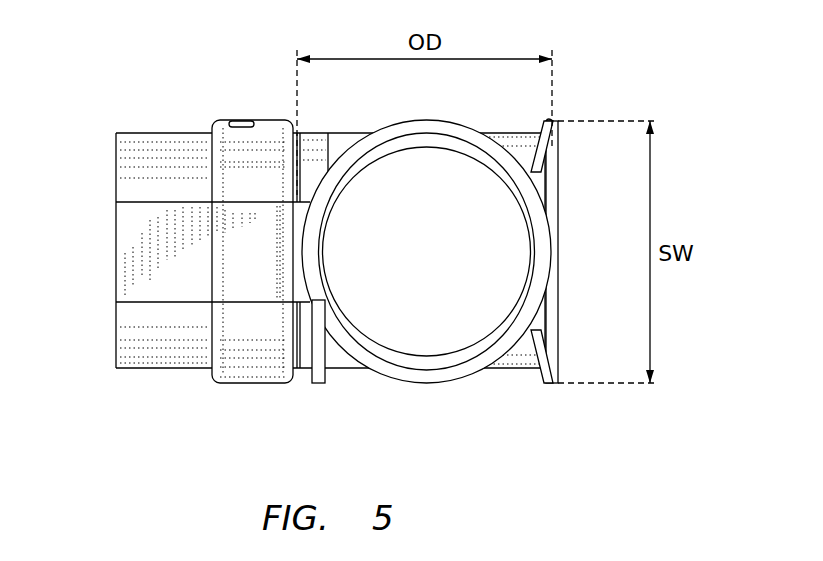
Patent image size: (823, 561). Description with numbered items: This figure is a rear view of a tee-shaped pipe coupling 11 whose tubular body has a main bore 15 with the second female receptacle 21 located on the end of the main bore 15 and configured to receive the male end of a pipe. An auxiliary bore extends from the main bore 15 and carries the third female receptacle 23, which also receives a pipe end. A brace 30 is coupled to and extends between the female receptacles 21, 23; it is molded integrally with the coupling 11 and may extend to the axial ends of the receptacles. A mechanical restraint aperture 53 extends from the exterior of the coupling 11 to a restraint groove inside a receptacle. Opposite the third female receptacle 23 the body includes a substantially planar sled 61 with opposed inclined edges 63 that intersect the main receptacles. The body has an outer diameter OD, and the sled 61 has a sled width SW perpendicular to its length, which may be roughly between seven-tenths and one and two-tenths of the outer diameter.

The pipe coupling 11 is at (694, 51).
The main bore 15 is at (430, 346).
The second female receptacle 21 is at (425, 384).
The third female receptacle 23 is at (115, 332).
The brace 30 is at (127, 237).
The mechanical restraint aperture 53 is at (240, 120).
The sled 61 is at (560, 315).
The opposed edges 63 is at (540, 113).